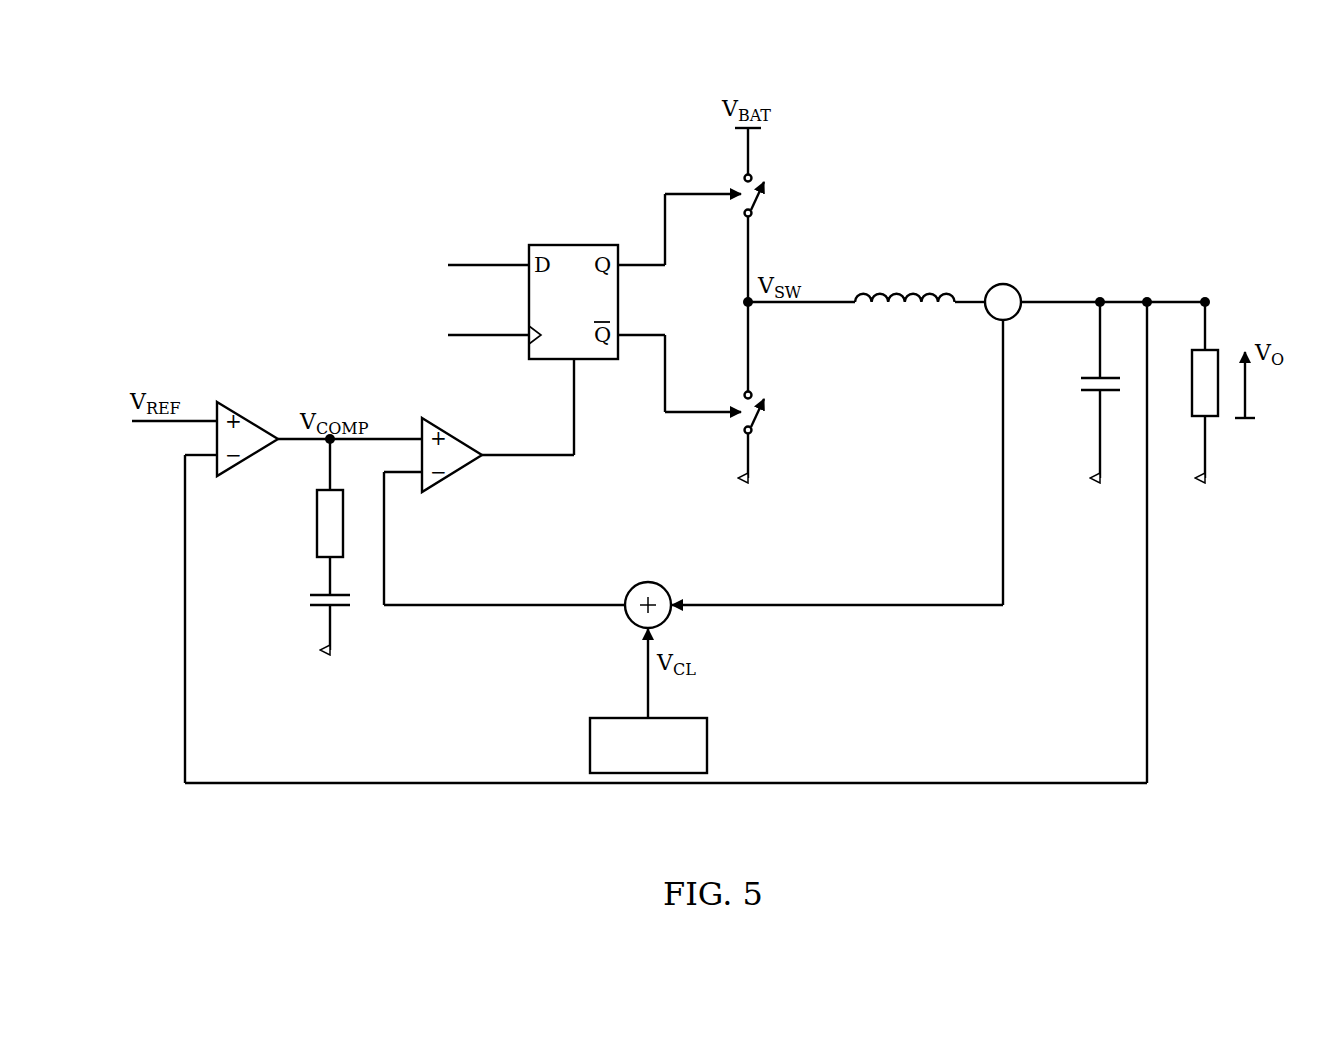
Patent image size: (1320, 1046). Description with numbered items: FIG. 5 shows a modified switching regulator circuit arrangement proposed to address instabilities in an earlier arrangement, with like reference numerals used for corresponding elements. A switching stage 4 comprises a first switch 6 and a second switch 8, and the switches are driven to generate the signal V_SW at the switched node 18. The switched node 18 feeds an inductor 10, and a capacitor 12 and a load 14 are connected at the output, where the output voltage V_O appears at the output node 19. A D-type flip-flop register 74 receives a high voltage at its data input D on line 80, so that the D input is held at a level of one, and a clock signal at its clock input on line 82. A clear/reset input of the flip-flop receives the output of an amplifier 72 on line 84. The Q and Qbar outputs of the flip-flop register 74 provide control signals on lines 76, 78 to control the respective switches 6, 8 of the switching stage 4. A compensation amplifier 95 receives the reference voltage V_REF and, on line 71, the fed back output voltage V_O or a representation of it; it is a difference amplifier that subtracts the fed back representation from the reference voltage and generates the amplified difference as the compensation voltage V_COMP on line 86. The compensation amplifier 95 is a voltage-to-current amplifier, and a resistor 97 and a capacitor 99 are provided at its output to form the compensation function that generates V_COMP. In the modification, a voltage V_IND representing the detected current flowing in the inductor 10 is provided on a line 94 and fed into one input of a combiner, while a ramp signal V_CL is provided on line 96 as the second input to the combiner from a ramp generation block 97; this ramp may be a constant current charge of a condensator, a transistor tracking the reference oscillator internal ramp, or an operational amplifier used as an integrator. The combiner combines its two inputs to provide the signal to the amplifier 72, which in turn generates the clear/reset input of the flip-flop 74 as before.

The switching stage 4 is at (776, 146).
The switch 6 is at (760, 198).
The switch 8 is at (760, 416).
The inductor 10 is at (900, 292).
The capacitor 12 is at (1092, 393).
The load 14 is at (1198, 420).
The switched node 18 is at (745, 300).
The output node 19 is at (1205, 299).
The line 71 is at (930, 784).
The amplifier 72 is at (455, 432).
The D-type flip-flop register 74 is at (563, 245).
The line 76 is at (700, 192).
The line 78 is at (700, 414).
The line 80 is at (513, 270).
The line 82 is at (513, 337).
The line 84 is at (576, 408).
The line 86 is at (400, 437).
The line 94 is at (855, 606).
The compensation amplifier 95 is at (236, 408).
The line 96 is at (647, 677).
The resistor / ramp generation block 97 is at (317, 512).
The capacitor 99 is at (322, 592).